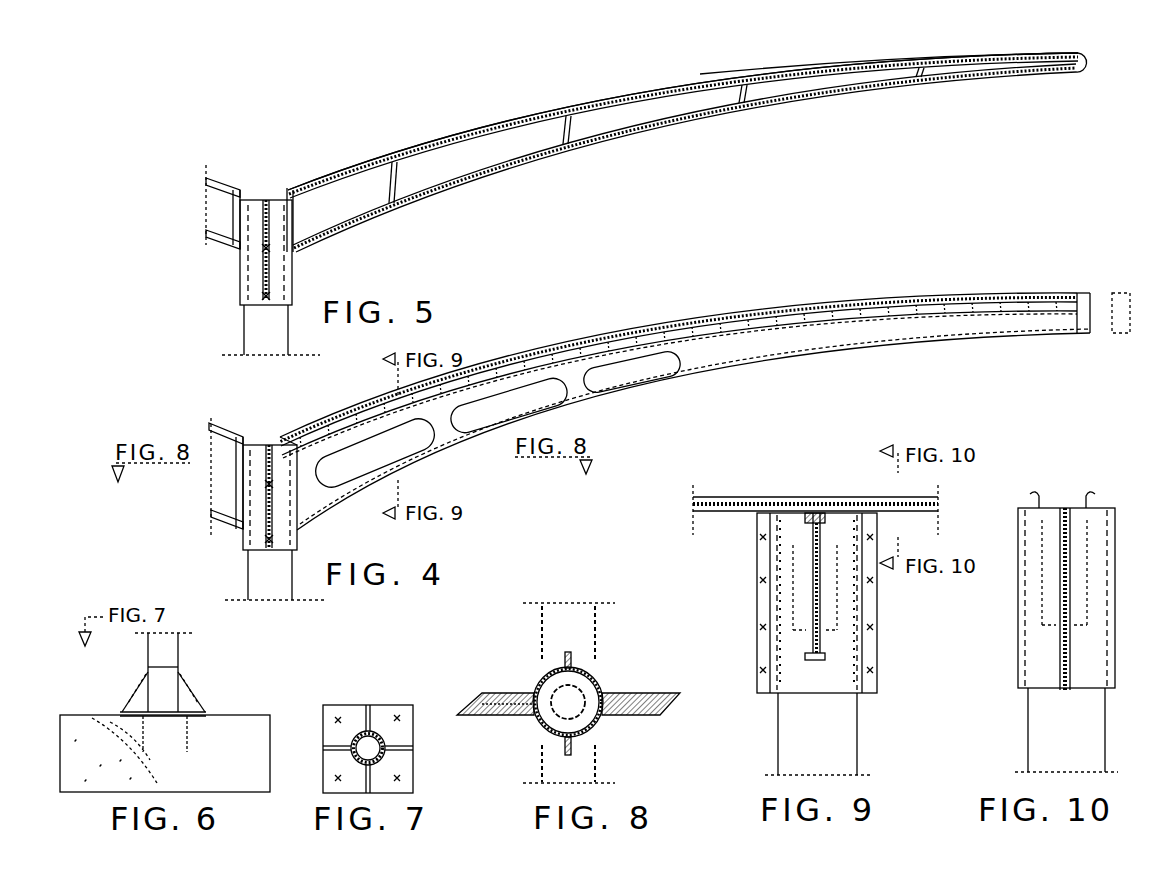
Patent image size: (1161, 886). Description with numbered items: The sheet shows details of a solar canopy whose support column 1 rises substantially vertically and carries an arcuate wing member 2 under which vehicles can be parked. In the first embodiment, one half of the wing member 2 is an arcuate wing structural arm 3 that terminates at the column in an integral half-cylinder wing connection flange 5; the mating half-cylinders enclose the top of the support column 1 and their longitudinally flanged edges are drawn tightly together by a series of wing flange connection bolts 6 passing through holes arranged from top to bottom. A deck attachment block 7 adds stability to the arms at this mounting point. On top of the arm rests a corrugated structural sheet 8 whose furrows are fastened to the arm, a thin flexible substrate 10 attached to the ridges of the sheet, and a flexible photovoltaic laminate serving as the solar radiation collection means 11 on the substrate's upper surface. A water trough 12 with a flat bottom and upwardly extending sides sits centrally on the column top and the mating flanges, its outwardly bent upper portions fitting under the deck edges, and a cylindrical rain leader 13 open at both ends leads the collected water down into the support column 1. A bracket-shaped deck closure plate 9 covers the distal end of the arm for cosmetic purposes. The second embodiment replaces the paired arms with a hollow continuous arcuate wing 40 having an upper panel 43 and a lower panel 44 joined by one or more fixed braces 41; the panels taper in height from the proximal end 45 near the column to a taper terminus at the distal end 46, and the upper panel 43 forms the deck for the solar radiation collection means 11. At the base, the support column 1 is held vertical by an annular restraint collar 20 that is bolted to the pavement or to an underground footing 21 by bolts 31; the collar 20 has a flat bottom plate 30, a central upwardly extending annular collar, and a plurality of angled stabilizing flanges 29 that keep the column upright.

In FIG. 5, the support column 1 is at (244, 328).
In FIG. 4, the support column 1 is at (248, 573).
In FIG. 6, the support column 1 is at (148, 652).
In FIG. 7, the support column 1 is at (352, 740).
In FIG. 8, the support column 1 is at (560, 735).
In FIG. 9, the support column 1 is at (778, 745).
In FIG. 10, the support column 1 is at (1028, 742).
In FIG. 4, the wing member 2 is at (705, 394).
In FIG. 4, the wing structural arm 3 is at (688, 365).
In FIG. 8, the wing structural arm 3 is at (628, 692).
In FIG. 9, the wing structural arm 3 is at (762, 553).
In FIG. 5, the wing connection flange 5 is at (240, 270).
In FIG. 4, the wing connection flange 5 is at (243, 535).
In FIG. 8, the wing connection flange 5 is at (600, 675).
In FIG. 9, the wing connection flange 5 is at (880, 678).
In FIG. 10, the wing connection flange 5 is at (1030, 678).
In FIG. 5, the wing flange connection bolt 6 is at (283, 290).
In FIG. 4, the wing flange connection bolt 6 is at (297, 520).
In FIG. 8, the wing flange connection bolt 6 is at (548, 655).
In FIG. 9, the wing flange connection bolt 6 is at (757, 645).
In FIG. 10, the wing flange connection bolt 6 is at (1060, 658).
In FIG. 8, the deck attachment block 7 is at (525, 700).
In FIG. 9, the deck attachment block 7 is at (818, 510).
In FIG. 4, the corrugated structural sheet 8 is at (565, 345).
In FIG. 4, the deck closure plate 9 is at (1115, 293).
In FIG. 4, the substrate 10 is at (618, 335).
In FIG. 5, the solar radiation collection means 11 is at (838, 52).
In FIG. 4, the solar radiation collection means 11 is at (680, 322).
In FIG. 5, the water trough 12 is at (262, 200).
In FIG. 4, the water trough 12 is at (262, 445).
In FIG. 8, the water trough 12 is at (575, 650).
In FIG. 9, the water trough 12 is at (722, 495).
In FIG. 10, the water trough 12 is at (1092, 493).
In FIG. 8, the rain leader 13 is at (598, 712).
In FIG. 9, the rain leader 13 is at (877, 622).
In FIG. 10, the rain leader 13 is at (1070, 620).
In FIG. 6, the annular restraint collar 20 is at (178, 652).
In FIG. 7, the annular restraint collar 20 is at (400, 778).
In FIG. 6, the underground footing 21 is at (82, 772).
In FIG. 6, the stabilizing flange 29 is at (200, 700).
In FIG. 7, the stabilizing flange 29 is at (368, 705).
In FIG. 6, the bottom plate 30 is at (215, 710).
In FIG. 7, the bottom plate 30 is at (340, 705).
In FIG. 6, the bolt 31 is at (112, 718).
In FIG. 5, the continuous arcuate wing 40 is at (687, 148).
In FIG. 5, the brace 41 is at (402, 138).
In FIG. 5, the upper panel 43 is at (530, 108).
In FIG. 5, the lower panel 44 is at (620, 136).
In FIG. 5, the proximal end 45 is at (306, 258).
In FIG. 5, the distal end 46 is at (1078, 74).